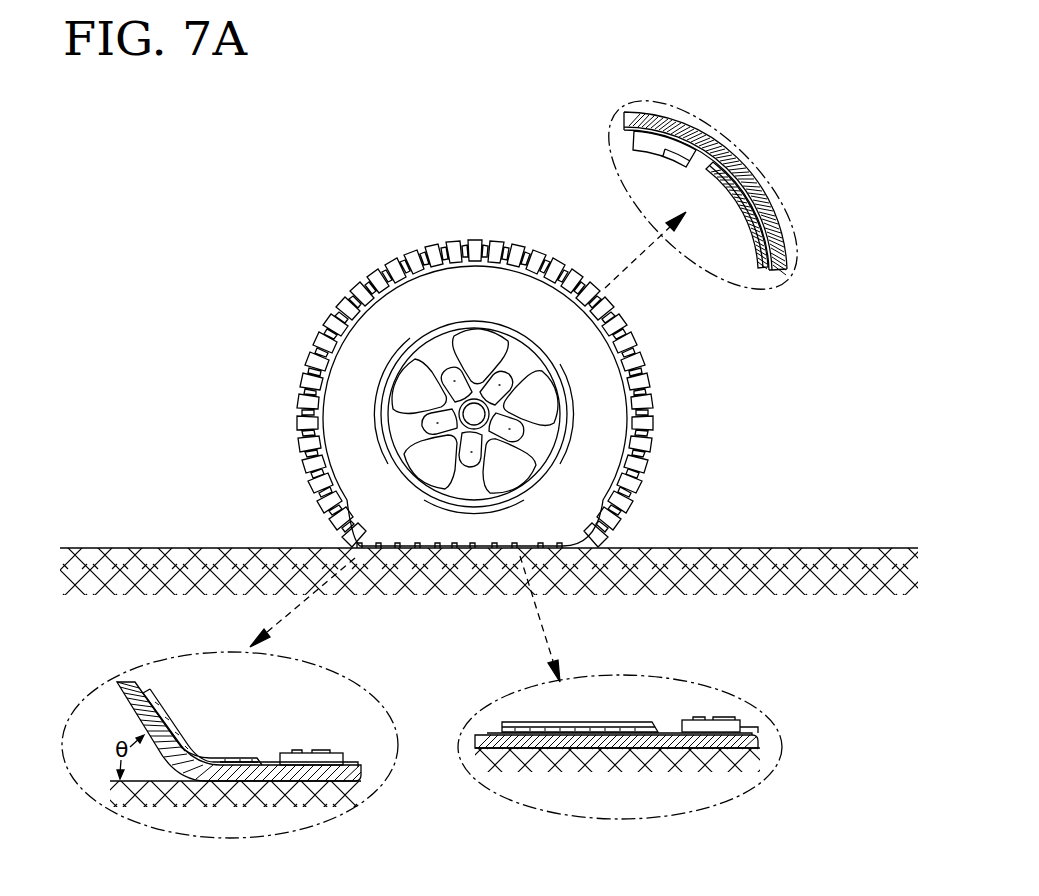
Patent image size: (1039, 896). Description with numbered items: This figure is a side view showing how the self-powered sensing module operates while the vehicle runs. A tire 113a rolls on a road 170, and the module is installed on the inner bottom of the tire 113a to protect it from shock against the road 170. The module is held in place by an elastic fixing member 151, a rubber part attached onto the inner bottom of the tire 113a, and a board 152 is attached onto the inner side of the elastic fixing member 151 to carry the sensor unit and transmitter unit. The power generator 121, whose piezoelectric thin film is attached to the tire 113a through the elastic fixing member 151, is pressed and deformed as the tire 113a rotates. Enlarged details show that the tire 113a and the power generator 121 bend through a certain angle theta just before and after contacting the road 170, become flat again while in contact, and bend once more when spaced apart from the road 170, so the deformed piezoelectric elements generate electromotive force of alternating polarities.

The tire 113a is at (372, 270).
The power generator 121 is at (736, 226).
The elastic fixing member 151 is at (626, 128).
The board 152 is at (636, 141).
The road 170 is at (225, 547).